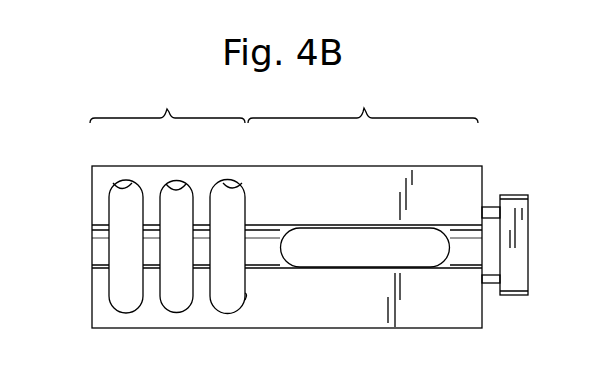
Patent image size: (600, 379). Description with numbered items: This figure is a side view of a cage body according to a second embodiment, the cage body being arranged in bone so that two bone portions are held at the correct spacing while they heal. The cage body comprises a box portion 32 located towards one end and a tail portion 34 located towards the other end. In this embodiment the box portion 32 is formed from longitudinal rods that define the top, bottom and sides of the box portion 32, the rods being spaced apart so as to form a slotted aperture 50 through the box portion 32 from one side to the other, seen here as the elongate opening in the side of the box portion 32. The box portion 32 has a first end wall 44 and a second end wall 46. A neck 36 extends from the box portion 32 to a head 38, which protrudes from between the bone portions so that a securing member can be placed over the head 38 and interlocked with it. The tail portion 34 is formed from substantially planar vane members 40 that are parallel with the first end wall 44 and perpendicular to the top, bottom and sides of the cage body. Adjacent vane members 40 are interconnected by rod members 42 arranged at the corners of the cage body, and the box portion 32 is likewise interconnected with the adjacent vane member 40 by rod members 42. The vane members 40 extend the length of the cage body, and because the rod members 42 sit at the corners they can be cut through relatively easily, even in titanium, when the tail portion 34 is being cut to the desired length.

The box portion 32 is at (363, 103).
The tail portion 34 is at (167, 103).
The neck 36 is at (488, 284).
The head 38 is at (530, 285).
The vane members 40 is at (102, 292).
The rod members 42 is at (123, 187).
The first end wall 44 is at (482, 178).
The second end wall 46 is at (242, 293).
The slotted aperture 50 is at (372, 258).